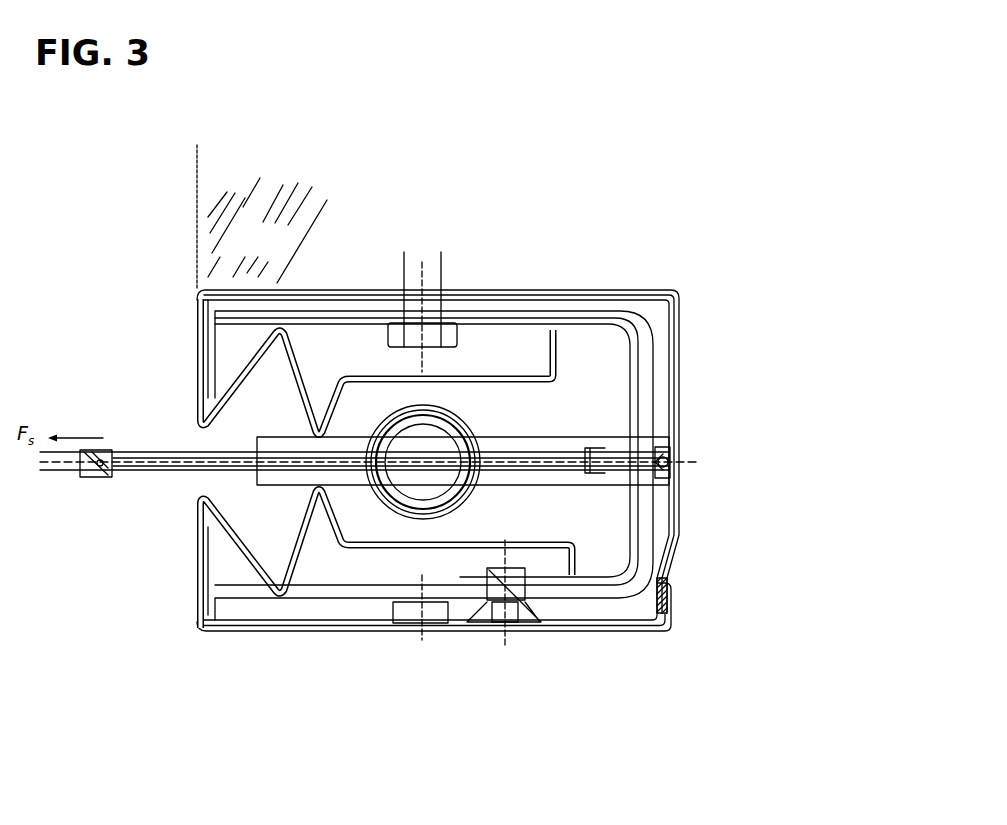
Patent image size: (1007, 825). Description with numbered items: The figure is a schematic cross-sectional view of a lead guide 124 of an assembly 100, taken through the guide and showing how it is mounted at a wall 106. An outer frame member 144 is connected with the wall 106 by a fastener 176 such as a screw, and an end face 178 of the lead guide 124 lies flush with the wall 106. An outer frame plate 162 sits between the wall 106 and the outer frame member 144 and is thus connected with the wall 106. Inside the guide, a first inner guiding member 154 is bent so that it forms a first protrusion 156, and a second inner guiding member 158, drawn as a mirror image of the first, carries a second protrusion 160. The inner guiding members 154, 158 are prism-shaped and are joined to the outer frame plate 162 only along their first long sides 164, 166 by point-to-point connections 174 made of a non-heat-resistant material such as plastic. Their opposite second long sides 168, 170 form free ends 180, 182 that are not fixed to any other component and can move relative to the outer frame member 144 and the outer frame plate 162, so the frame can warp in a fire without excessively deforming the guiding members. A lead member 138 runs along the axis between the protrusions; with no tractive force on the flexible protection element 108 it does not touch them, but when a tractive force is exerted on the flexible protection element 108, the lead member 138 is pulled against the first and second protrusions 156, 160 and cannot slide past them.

The actuator assembly 100 is at (496, 409).
The wall 106 is at (262, 217).
The flexible protection element 108 is at (72, 472).
The lead guide 124 is at (683, 283).
The lead member 138 is at (423, 434).
The outer frame member 144 is at (515, 302).
The first inner guiding member 154 is at (297, 562).
The first protrusion 156 is at (503, 608).
The second inner guiding member 158 is at (297, 350).
The second protrusion 160 is at (509, 290).
The outer frame plate 162 is at (683, 363).
The first long side 164 is at (216, 573).
The first long side 166 is at (214, 334).
The second long side 168 is at (686, 554).
The second long side 170 is at (683, 332).
The point-to-point connections 174 is at (218, 561).
The fastener 176 is at (436, 275).
The end face 178 is at (146, 384).
The free end 180 is at (575, 553).
The free end 182 is at (559, 337).